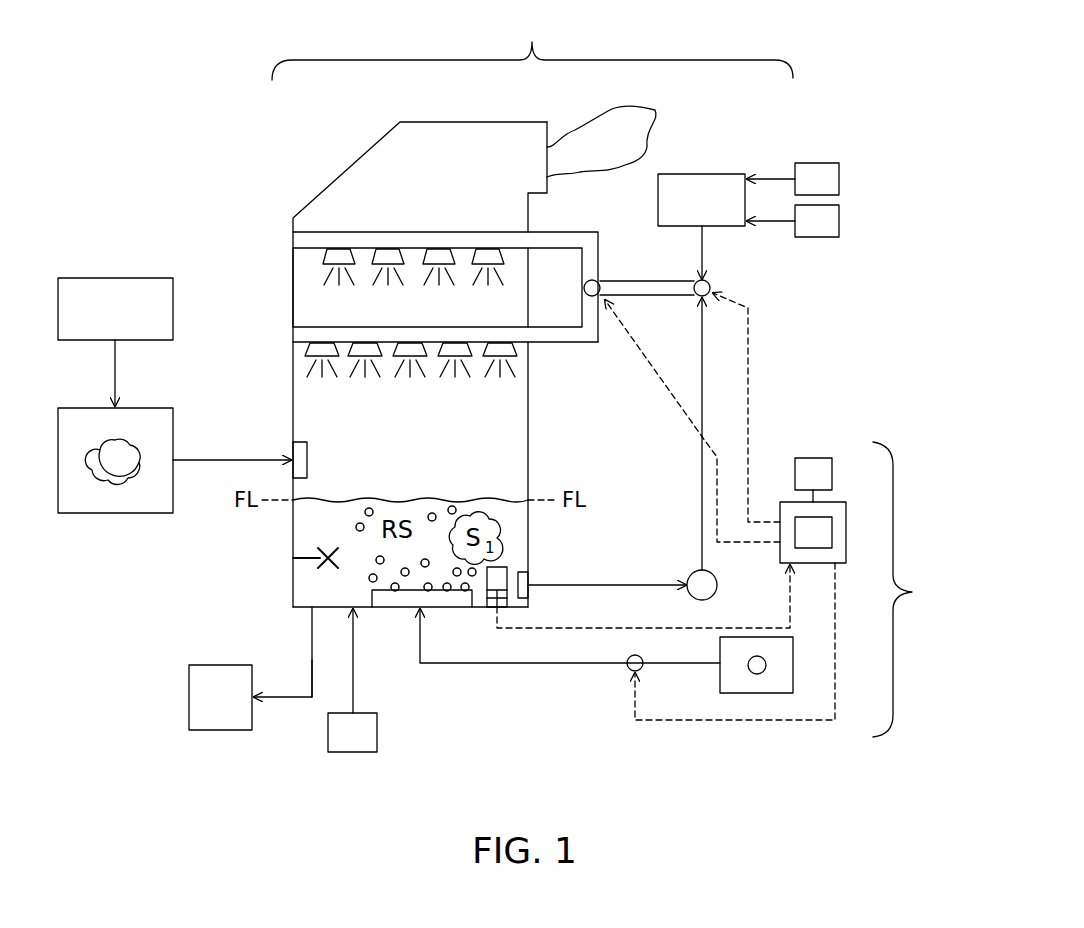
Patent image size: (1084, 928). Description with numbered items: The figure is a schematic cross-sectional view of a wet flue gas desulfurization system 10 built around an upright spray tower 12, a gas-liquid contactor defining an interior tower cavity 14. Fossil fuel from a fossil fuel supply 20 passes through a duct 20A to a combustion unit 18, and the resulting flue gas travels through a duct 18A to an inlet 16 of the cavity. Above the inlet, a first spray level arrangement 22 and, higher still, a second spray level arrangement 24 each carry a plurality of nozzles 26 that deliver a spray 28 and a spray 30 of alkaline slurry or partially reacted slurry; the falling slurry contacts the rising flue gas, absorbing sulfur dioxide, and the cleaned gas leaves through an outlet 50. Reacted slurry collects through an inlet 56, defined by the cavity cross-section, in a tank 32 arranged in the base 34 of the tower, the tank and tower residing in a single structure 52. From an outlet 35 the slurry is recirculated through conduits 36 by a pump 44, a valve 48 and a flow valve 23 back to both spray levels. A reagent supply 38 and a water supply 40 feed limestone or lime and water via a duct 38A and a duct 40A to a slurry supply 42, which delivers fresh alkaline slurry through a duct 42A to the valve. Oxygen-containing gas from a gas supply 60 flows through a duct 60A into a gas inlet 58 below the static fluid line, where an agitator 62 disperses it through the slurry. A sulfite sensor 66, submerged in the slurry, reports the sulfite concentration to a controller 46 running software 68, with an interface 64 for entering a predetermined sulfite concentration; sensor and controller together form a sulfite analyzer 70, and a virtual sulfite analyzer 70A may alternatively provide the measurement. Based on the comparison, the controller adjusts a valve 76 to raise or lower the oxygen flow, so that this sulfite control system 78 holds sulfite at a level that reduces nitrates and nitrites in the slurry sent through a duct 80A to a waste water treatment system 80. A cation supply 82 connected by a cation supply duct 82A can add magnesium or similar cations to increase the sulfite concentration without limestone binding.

The wet flue gas desulfurization system 10 is at (532, 49).
The spray tower 12 is at (350, 167).
The interior tower cavity 14 is at (298, 302).
The inlet 16 is at (291, 445).
The combustion unit 18 is at (116, 515).
The duct 18A is at (206, 458).
The fossil fuel supply 20 is at (115, 276).
The duct 20A is at (118, 378).
The first spray level arrangement 22 is at (540, 337).
The flow valve 23 is at (598, 282).
The second spray level arrangement 24 is at (540, 240).
The nozzles 26 is at (355, 258).
The spray 28 is at (370, 378).
The spray 30 is at (341, 284).
The tank 32 is at (300, 590).
The base 34 is at (330, 612).
The outlet 35 is at (530, 597).
The conduits 36 is at (625, 584).
The reagent supply 38 is at (826, 160).
The duct 38A is at (778, 177).
The water supply 40 is at (842, 221).
The duct 40A is at (790, 237).
The slurry supply 42 is at (702, 172).
The duct 42A is at (706, 266).
The pump 44 is at (697, 572).
The controller 46 is at (840, 500).
The valve 48 is at (695, 297).
The outlet 50 is at (548, 135).
The single structure 52 is at (531, 450).
The inlet 56 is at (500, 488).
The gas inlet 58 is at (415, 608).
The gas supply 60 is at (757, 698).
The duct 60A is at (530, 667).
The agitator 62 is at (318, 555).
The interface 64 is at (813, 470).
The sulfite sensor 66 is at (506, 572).
The software 68 is at (815, 550).
The sulfite analyzer 70 is at (492, 605).
The virtual sulfite analyzer 70A is at (510, 630).
The valve 76 is at (635, 654).
The sulfite control system 78 is at (908, 589).
The waste water treatment system 80 is at (222, 718).
The duct 80A is at (310, 690).
The cation supply 82 is at (353, 755).
The cation supply duct 82A is at (356, 690).